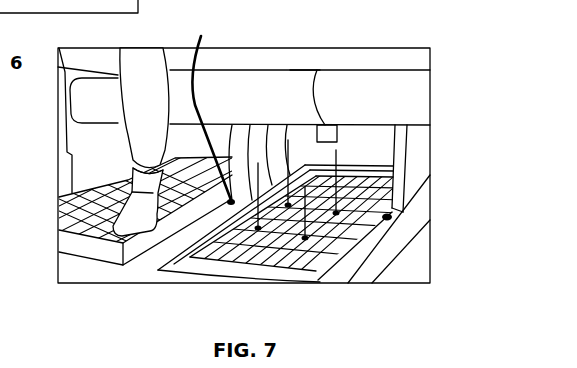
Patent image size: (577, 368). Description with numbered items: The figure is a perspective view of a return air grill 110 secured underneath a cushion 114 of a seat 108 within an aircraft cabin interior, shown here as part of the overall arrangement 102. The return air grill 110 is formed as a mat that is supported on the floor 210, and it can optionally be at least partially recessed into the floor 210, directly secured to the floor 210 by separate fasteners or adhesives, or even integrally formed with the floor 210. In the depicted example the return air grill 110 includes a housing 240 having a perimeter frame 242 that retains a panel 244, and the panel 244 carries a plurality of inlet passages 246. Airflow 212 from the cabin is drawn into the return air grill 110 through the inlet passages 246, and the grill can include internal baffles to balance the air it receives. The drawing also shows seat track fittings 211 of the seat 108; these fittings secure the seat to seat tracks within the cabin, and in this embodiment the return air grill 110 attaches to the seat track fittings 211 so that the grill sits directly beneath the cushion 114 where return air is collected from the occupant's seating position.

The exercise apparatus / treadmill system 102 is at (84, 292).
The seat 108 is at (245, 72).
The return air grill 110 is at (313, 233).
The cushion 114 is at (298, 78).
The floor 210 is at (108, 277).
The seat track fittings 211 is at (450, 186).
The airflow 212 is at (350, 167).
The housing 240 is at (257, 272).
The perimeter frame 242 is at (343, 263).
The panel 244 is at (185, 262).
The inlet passages 246 is at (390, 221).